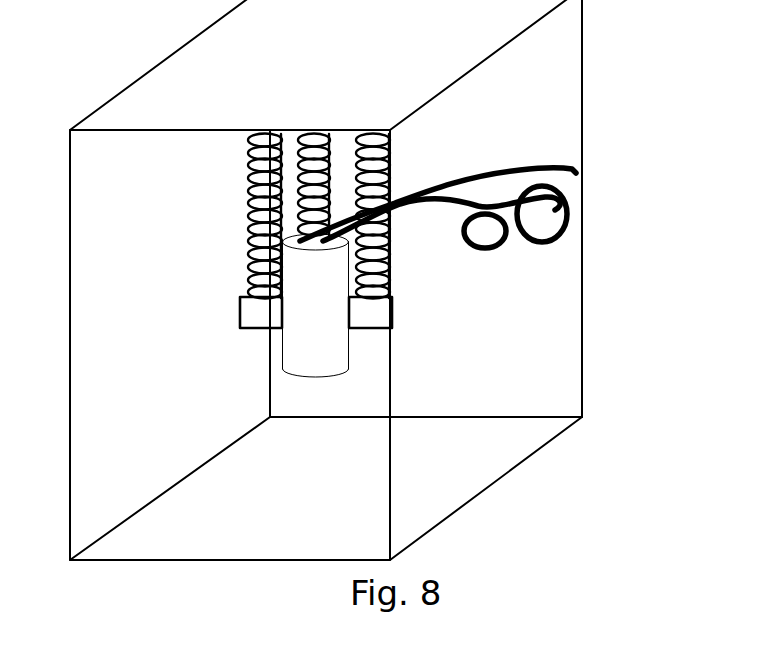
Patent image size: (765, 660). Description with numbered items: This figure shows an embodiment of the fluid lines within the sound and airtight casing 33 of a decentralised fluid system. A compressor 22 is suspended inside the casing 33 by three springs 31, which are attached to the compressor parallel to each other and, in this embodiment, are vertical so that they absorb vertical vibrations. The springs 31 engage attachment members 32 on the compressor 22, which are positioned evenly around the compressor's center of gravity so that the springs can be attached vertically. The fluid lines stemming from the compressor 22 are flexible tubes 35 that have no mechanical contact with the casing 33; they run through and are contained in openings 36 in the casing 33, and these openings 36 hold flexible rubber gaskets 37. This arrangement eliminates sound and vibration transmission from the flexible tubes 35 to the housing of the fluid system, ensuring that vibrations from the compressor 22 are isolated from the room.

The compressor 22 is at (305, 375).
The springs 31 is at (258, 202).
The attachment members 32 is at (252, 328).
The sound and airtight casing 33 is at (140, 76).
The flexible tubes 35 is at (545, 165).
The openings 36 is at (490, 182).
The flexible rubber gaskets 37 is at (452, 200).